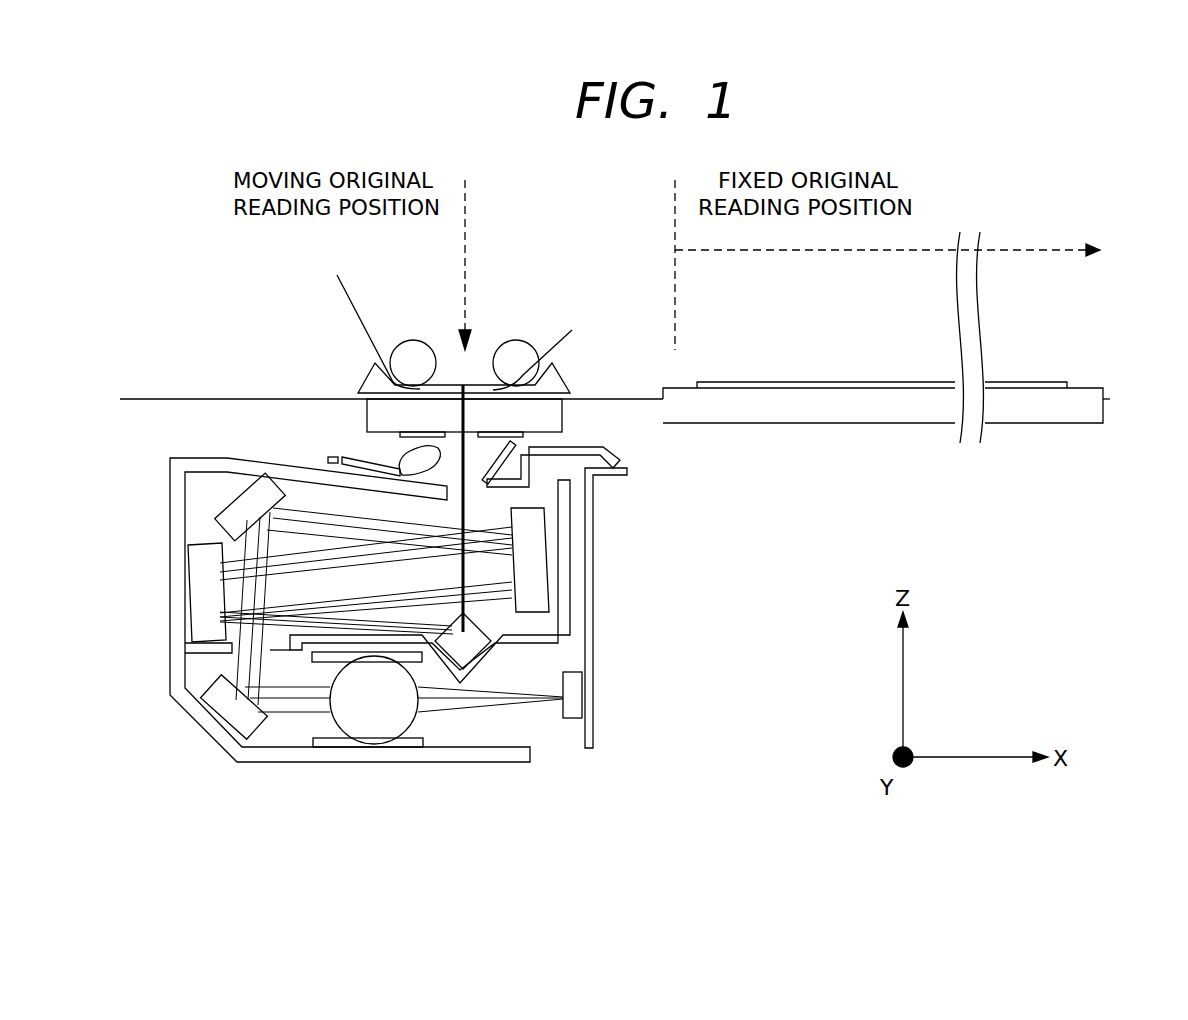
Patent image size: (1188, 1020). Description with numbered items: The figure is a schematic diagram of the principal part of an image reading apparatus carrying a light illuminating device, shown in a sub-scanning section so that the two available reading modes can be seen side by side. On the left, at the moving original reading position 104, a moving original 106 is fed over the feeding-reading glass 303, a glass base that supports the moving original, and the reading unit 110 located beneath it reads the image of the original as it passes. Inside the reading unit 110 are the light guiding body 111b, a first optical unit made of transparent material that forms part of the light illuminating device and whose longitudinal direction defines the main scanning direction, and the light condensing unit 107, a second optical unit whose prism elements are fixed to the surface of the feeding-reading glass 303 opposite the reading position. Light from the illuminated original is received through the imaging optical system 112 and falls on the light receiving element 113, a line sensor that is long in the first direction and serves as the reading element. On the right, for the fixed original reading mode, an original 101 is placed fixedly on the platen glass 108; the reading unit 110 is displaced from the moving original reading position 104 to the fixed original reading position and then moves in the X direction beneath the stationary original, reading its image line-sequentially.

The original 101 is at (783, 382).
The moving original reading position 104 is at (467, 232).
The original 106 is at (557, 330).
The light condensing unit 107 is at (507, 420).
The platen glass 108 is at (1044, 412).
The reading unit 110 is at (379, 619).
The light guiding body 111b is at (340, 449).
The imaging optical system 112 is at (375, 727).
The light receiving element 113 is at (582, 692).
The feeding-reading glass 303 is at (387, 412).